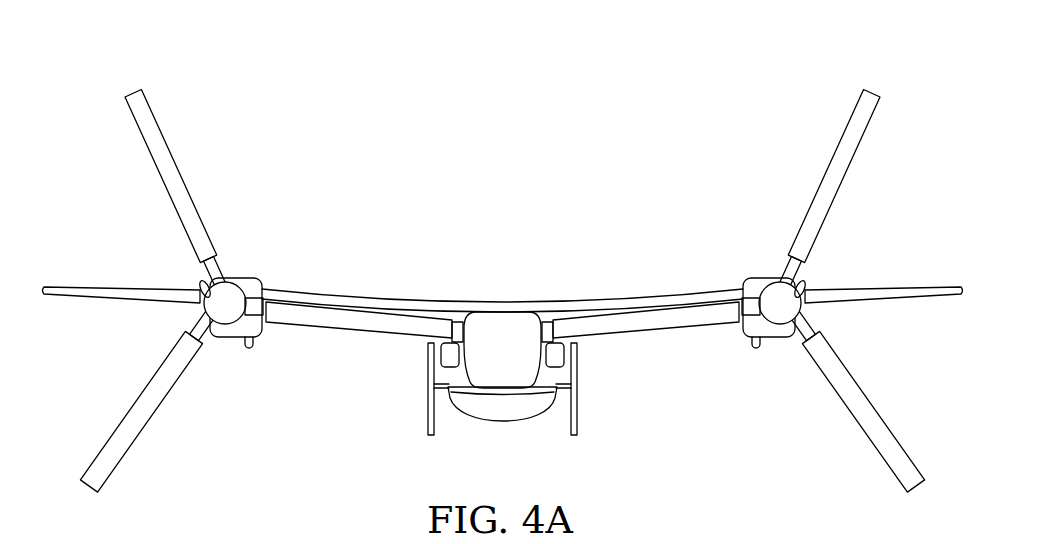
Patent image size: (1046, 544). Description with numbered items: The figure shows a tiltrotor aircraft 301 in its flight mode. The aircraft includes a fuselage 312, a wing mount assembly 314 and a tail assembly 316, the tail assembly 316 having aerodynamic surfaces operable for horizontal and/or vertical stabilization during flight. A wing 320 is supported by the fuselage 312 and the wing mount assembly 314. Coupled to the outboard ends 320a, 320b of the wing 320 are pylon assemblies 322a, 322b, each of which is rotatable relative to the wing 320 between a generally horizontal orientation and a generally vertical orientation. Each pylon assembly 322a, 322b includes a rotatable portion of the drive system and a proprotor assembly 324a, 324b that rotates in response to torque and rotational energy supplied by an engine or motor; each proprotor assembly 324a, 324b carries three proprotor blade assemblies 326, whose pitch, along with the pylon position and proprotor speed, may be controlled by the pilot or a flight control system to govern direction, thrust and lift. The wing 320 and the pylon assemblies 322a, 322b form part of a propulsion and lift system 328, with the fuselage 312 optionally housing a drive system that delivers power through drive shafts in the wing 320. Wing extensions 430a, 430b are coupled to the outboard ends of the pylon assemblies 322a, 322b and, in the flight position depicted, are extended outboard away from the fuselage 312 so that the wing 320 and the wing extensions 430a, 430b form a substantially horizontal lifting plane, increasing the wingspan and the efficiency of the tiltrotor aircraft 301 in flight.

The tiltrotor aircraft 301 is at (334, 65).
The fuselage 312 is at (500, 422).
The wing mount assembly 314 is at (500, 320).
The tail assembly 316 is at (577, 418).
The wing 320 is at (433, 298).
The outboard end of wing 320a is at (727, 292).
The outboard end of wing 320b is at (277, 292).
The pylon assembly 322a is at (775, 340).
The pylon assembly 322b is at (230, 340).
The proprotor assembly 324a is at (772, 294).
The proprotor assembly 324b is at (234, 294).
The proprotor blade assembly 326 is at (173, 148).
The propulsion and lift system 328 is at (561, 292).
The wing extension 430a is at (908, 288).
The wing extension 430b is at (93, 288).